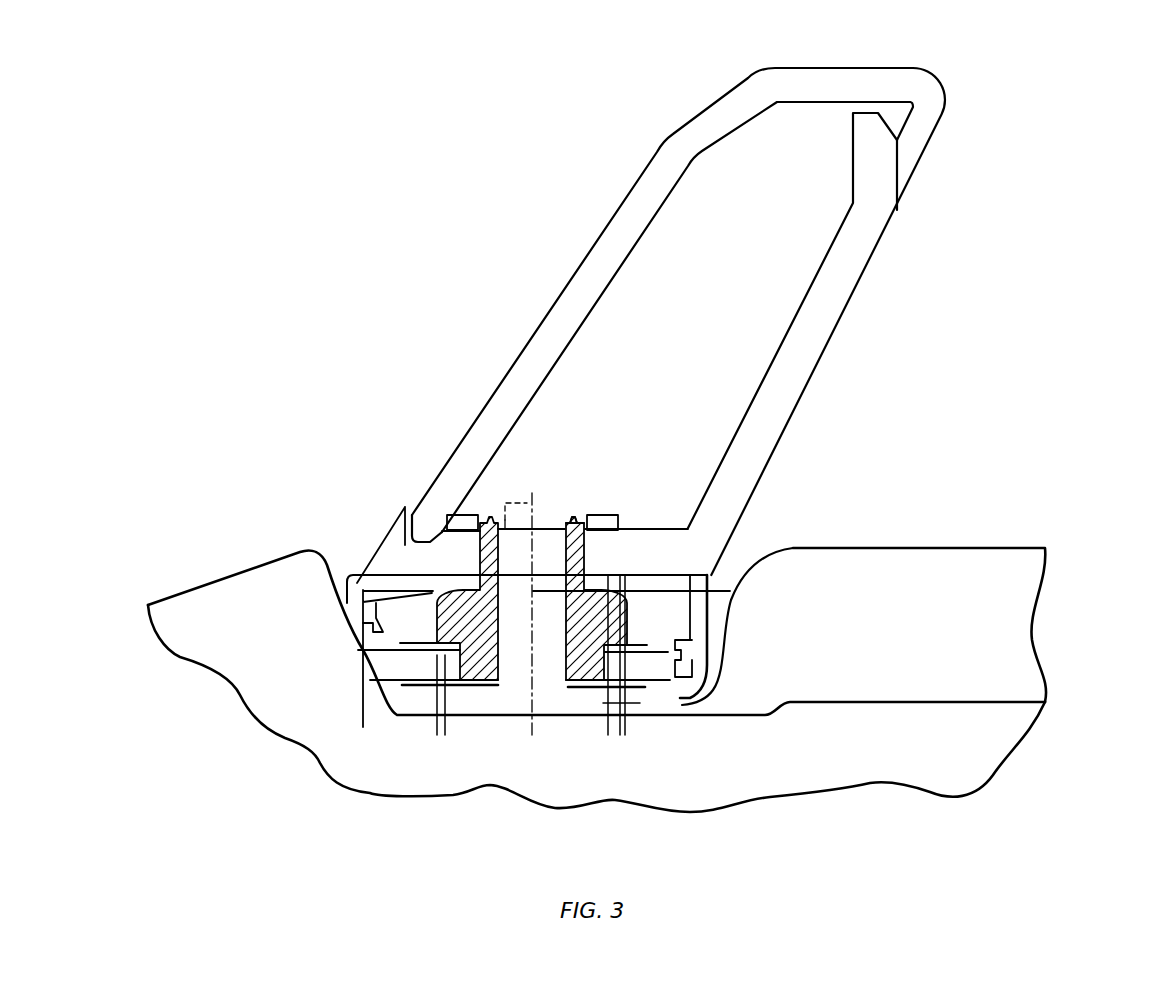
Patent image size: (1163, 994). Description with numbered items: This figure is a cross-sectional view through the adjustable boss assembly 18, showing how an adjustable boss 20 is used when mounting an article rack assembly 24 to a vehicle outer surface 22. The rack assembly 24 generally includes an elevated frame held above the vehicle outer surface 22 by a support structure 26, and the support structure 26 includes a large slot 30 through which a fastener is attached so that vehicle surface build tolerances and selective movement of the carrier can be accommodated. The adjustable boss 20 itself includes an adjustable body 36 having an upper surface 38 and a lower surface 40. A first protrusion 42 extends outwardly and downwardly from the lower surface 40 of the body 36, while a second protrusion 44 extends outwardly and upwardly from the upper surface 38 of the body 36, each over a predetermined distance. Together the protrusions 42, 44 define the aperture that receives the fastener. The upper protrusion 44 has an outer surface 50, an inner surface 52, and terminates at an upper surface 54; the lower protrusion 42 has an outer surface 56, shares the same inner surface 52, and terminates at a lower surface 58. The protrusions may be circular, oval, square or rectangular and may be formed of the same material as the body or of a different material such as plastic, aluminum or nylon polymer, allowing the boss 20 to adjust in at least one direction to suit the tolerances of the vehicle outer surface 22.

The adjustable boss assembly 18 is at (1078, 102).
The adjustable boss 20 is at (480, 657).
The vehicle outer surface 22 is at (641, 696).
The article rack assembly 24 is at (850, 311).
The support structure 26 is at (853, 88).
The slot 30 is at (490, 516).
The adjustable body 36 is at (598, 620).
The upper surface 38 is at (458, 578).
The lower surface 40 is at (452, 652).
The first protrusion 42 is at (610, 650).
The second protrusion 44 is at (580, 530).
The outer surface 50 is at (605, 538).
The inner surface 52 is at (563, 542).
The upper surface 54 is at (573, 517).
The outer surface 56 is at (607, 670).
The lower surface 58 is at (485, 683).